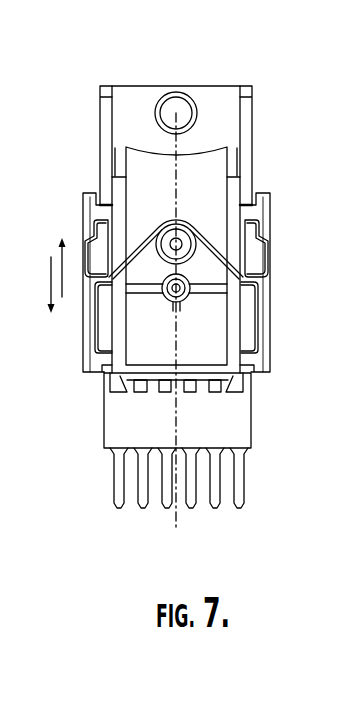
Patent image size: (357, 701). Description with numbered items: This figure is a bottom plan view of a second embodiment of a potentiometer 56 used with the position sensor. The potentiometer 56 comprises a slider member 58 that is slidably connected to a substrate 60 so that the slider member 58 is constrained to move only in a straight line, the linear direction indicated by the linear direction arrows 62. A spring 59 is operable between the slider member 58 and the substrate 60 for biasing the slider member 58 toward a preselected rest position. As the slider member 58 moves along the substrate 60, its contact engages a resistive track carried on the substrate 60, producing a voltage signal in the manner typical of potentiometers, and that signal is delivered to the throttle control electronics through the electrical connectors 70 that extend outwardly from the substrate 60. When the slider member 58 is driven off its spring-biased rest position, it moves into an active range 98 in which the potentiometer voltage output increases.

The potentiometer 56 is at (249, 68).
The slider member 58 is at (267, 207).
The spring 59 is at (137, 238).
The substrate 60 is at (243, 142).
The linear direction arrows 62 is at (55, 278).
The electrical connectors 70 is at (140, 507).
The active range 98 is at (90, 388).